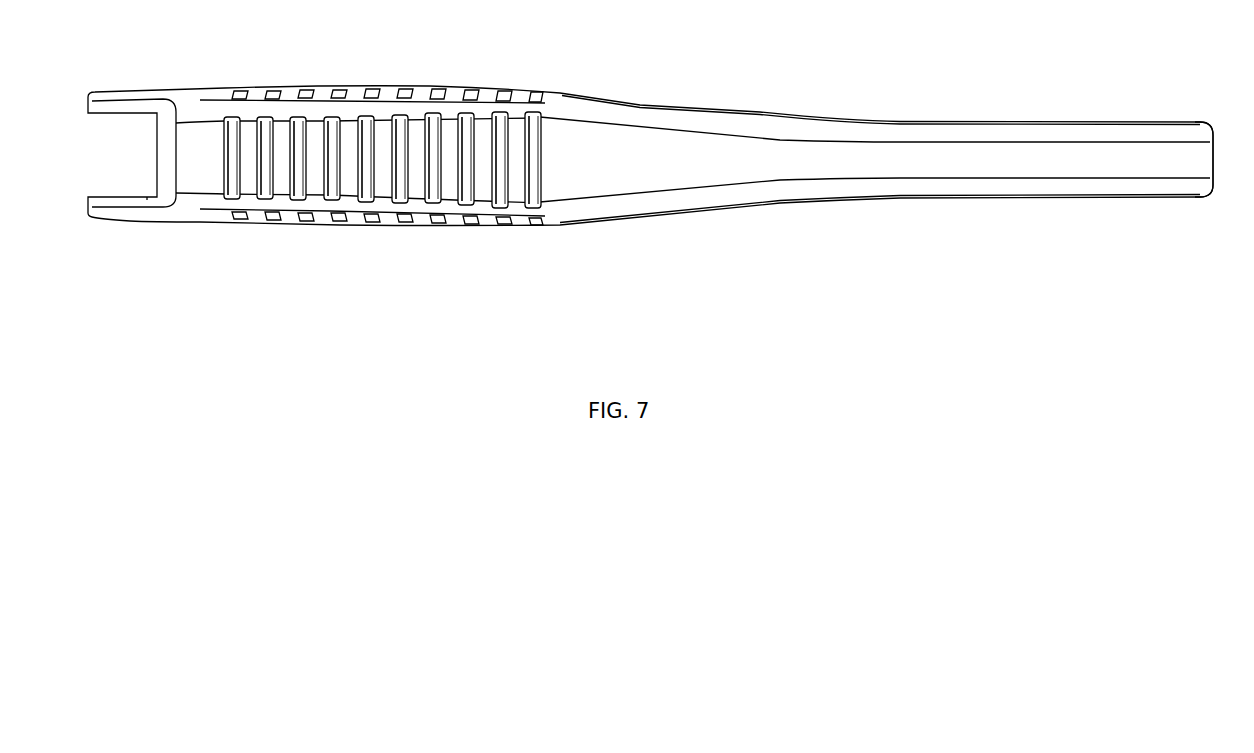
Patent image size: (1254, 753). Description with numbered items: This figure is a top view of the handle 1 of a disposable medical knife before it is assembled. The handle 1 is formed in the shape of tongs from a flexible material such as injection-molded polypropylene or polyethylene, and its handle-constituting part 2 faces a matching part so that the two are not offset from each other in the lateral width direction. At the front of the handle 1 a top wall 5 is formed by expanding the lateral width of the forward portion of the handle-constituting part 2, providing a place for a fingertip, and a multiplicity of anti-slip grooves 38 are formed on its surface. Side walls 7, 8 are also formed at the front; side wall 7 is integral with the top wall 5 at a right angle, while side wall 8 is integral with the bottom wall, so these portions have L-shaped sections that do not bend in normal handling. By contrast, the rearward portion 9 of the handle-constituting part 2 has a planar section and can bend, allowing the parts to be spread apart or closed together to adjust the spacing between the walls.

The handle 1 is at (623, 100).
The handle-constituting part 2 is at (698, 155).
The top wall 5 is at (417, 178).
The side wall 7 is at (348, 92).
The side wall 8 is at (342, 220).
The rearward portion 9 is at (1038, 152).
The anti-slip grooves 38 is at (467, 182).